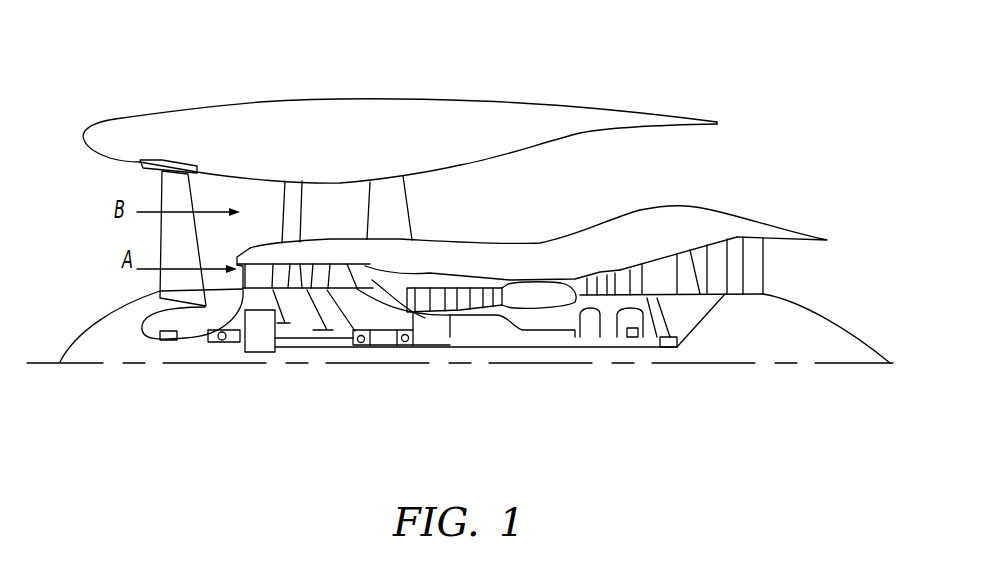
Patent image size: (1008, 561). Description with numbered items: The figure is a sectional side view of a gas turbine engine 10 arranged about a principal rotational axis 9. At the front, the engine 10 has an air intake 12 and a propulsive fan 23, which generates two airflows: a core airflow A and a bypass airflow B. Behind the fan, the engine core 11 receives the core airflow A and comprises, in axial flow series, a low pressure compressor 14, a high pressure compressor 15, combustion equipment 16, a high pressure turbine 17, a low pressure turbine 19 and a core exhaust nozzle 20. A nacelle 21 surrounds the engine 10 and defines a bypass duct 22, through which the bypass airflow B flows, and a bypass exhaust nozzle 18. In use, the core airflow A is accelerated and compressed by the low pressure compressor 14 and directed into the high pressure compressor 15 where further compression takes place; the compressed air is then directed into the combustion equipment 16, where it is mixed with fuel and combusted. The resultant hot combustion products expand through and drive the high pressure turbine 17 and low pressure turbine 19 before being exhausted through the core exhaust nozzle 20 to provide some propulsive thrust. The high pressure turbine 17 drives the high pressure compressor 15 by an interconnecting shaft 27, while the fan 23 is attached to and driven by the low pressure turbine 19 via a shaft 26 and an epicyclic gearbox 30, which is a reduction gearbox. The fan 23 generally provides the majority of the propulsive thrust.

The principal rotational axis 9 is at (770, 363).
The gas turbine engine 10 is at (150, 106).
The core 11 is at (520, 260).
The air intake 12 is at (96, 181).
The low pressure compressor 14 is at (327, 264).
The high pressure compressor 15 is at (470, 297).
The combustion equipment 16 is at (540, 298).
The high pressure turbine 17 is at (597, 272).
The bypass exhaust nozzle 18 is at (718, 158).
The low pressure turbine 19 is at (736, 250).
The core exhaust nozzle 20 is at (802, 268).
The nacelle 21 is at (380, 110).
The bypass duct 22 is at (665, 180).
The propulsive fan 23 is at (163, 235).
The shaft 26 is at (460, 352).
The interconnecting shaft 27 is at (498, 337).
The epicyclic gearbox 30 is at (262, 345).